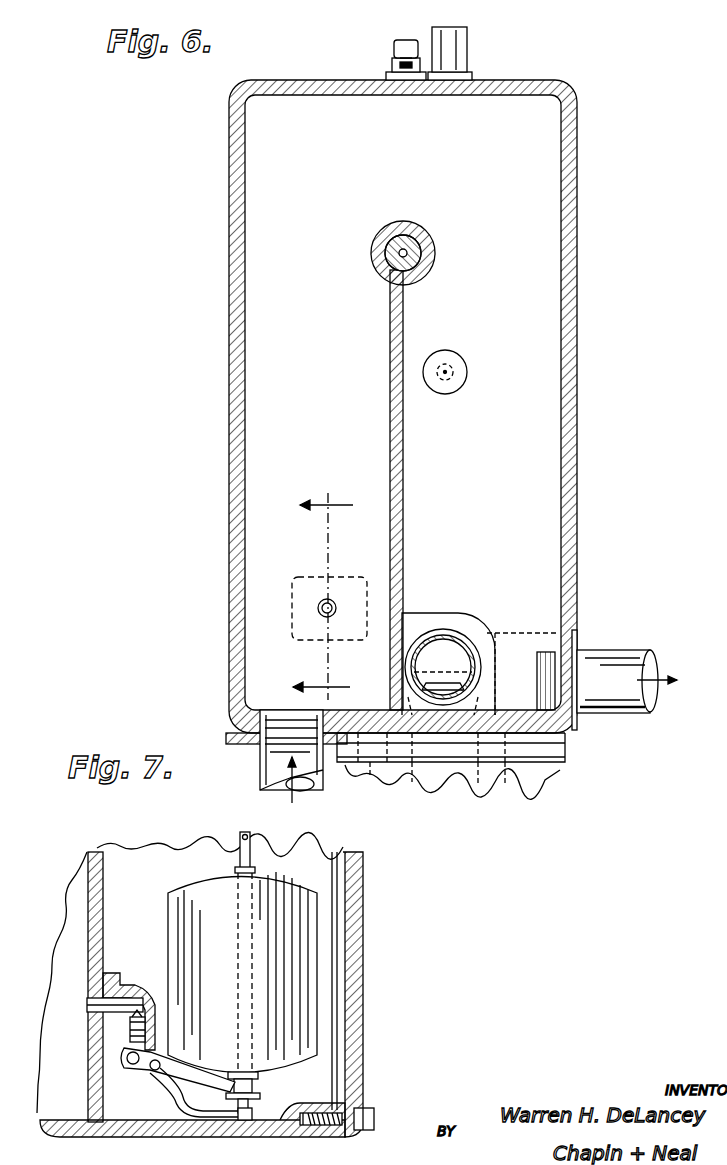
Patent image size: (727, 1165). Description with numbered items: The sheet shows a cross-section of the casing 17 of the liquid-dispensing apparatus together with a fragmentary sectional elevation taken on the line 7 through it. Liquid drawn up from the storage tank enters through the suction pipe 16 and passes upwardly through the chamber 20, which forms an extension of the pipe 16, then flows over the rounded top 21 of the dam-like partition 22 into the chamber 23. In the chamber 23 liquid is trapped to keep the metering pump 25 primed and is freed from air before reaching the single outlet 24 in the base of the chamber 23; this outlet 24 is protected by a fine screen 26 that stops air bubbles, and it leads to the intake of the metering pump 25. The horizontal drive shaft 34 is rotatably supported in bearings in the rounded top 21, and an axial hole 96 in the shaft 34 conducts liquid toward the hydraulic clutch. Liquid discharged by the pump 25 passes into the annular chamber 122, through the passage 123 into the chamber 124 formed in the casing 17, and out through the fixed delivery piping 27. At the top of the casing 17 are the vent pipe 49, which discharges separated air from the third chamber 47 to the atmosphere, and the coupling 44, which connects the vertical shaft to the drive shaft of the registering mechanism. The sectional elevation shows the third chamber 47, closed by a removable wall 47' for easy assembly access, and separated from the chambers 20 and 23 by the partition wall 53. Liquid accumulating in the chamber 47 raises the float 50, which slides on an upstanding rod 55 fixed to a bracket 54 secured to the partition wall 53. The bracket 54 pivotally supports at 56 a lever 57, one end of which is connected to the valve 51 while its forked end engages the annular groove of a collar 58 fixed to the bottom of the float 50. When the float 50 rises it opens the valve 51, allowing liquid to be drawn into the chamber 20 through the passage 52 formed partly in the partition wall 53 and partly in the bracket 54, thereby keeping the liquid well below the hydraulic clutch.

In FIG. 6, the section line 7— 7 is at (328, 587).
In FIG. 6, the suction pipe 16 is at (262, 762).
In FIG. 6, the casing 17 is at (577, 372).
In FIG. 7, the casing 17 is at (60, 1138).
In FIG. 6, the chamber 20 is at (317, 402).
In FIG. 7, the chamber 20 is at (190, 986).
In FIG. 6, the rounded top 21 is at (403, 222).
In FIG. 6, the dam-like partition 22 is at (392, 430).
In FIG. 6, the chamber 23 is at (482, 402).
In FIG. 6, the outlet 24 is at (442, 685).
In FIG. 6, the metering pump 25 is at (495, 780).
In FIG. 6, the fine screen 26 is at (443, 630).
In FIG. 6, the fixed piping 27 is at (617, 652).
In FIG. 6, the horizontal drive shaft 34 is at (421, 251).
In FIG. 6, the coupling 44 is at (468, 40).
In FIG. 7, the third chamber 47 is at (220, 852).
In FIG. 7, the removable wall 47' is at (373, 994).
In FIG. 6, the vent pipe 49 is at (393, 43).
In FIG. 7, the float 50 is at (242, 972).
In FIG. 7, the valve 51 is at (128, 1030).
In FIG. 6, the passage 52 is at (320, 600).
In FIG. 7, the passage 52 is at (100, 1004).
In FIG. 6, the partition wall 53 is at (556, 243).
In FIG. 7, the partition wall 53 is at (95, 900).
In FIG. 7, the bracket 54 is at (130, 995).
In FIG. 7, the upstanding rod 55 is at (240, 832).
In FIG. 7, the pivot 56 is at (140, 1073).
In FIG. 7, the lever 57 is at (175, 1100).
In FIG. 7, the collar 58 is at (258, 1096).
In FIG. 6, the hole 96 is at (398, 257).
In FIG. 6, the annular chamber 122 is at (520, 752).
In FIG. 6, the passage 123 is at (532, 695).
In FIG. 6, the chamber 124 is at (520, 660).